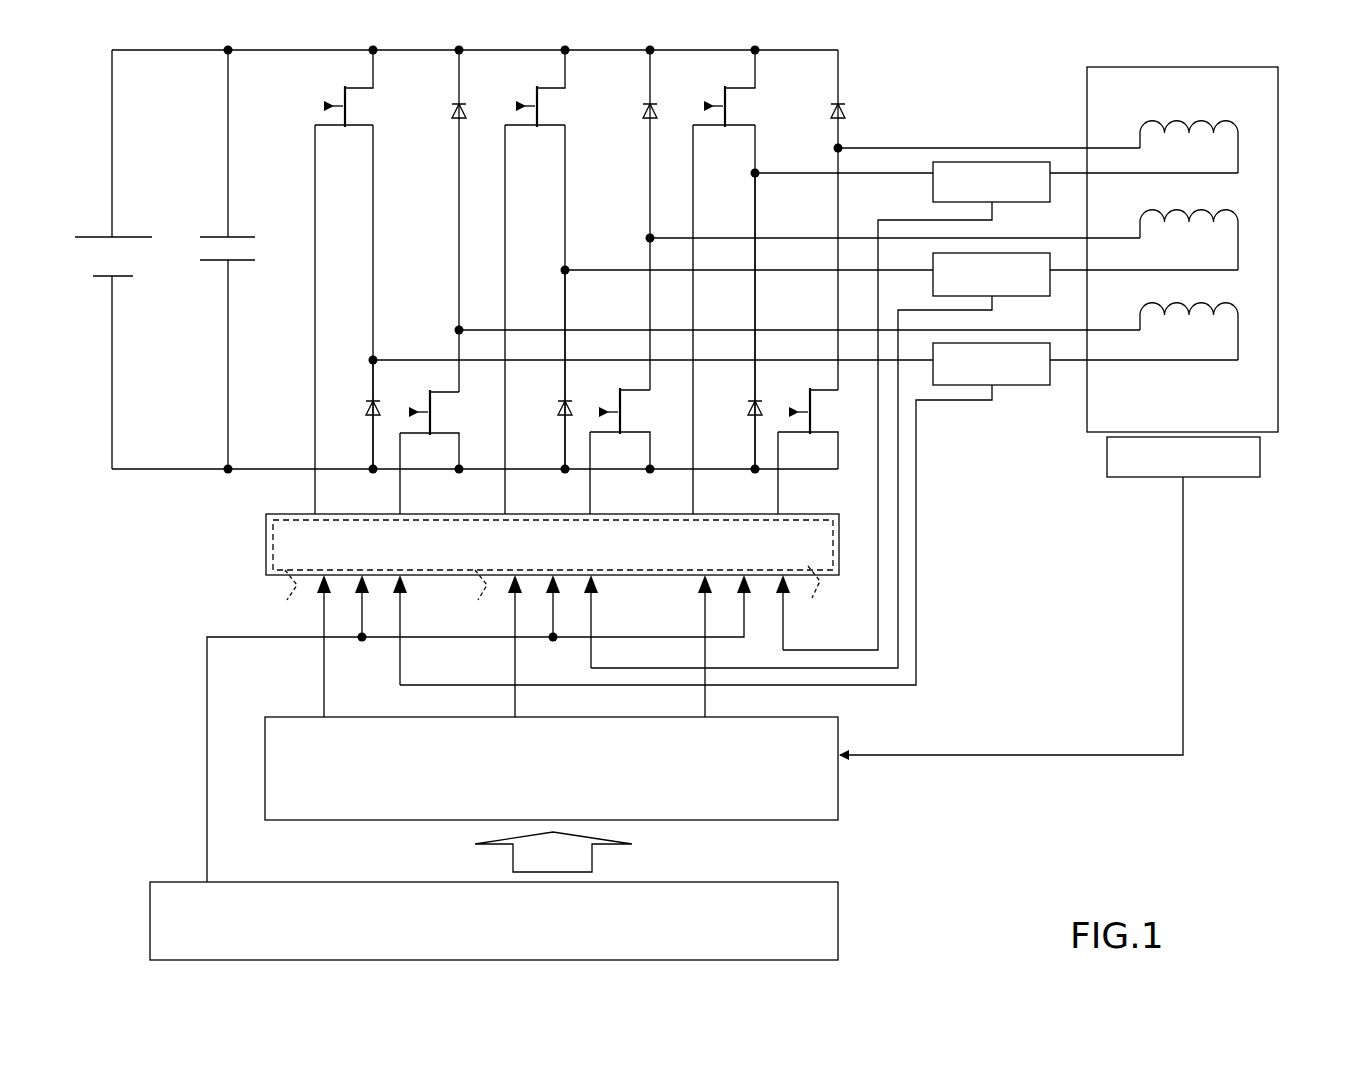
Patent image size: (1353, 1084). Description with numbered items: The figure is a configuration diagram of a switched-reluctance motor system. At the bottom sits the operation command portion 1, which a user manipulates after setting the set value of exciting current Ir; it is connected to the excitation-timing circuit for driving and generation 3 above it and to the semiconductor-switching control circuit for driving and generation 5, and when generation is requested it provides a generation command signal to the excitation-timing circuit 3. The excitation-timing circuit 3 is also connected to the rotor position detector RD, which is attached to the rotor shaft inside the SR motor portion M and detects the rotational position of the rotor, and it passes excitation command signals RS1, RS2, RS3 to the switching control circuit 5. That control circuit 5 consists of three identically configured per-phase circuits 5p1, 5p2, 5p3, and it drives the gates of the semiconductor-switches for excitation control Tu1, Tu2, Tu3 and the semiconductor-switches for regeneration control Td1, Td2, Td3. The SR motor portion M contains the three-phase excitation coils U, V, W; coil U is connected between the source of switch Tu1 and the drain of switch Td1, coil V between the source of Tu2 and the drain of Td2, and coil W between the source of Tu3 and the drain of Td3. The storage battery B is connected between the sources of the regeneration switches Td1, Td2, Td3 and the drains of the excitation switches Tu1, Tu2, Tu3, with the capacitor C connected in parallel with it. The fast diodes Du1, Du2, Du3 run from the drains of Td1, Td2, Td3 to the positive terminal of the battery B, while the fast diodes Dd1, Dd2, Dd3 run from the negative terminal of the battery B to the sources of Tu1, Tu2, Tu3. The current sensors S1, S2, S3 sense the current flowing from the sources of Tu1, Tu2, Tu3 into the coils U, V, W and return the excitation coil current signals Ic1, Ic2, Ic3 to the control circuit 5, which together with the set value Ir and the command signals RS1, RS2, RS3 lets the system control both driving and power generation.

The operation command portion 1 is at (840, 907).
The excitation-timing circuit for driving and generation 3 is at (840, 787).
The semiconductor-switching control circuit for driving and generation 5 is at (262, 550).
The SR motor portion M is at (1214, 249).
The rotor position detector RD is at (1260, 457).
The storage battery B is at (104, 259).
The capacitor C is at (206, 259).
The current sensor S1 is at (916, 406).
The current sensor S2 is at (820, 460).
The current sensor S3 is at (725, 514).
The semiconductor-switch for excitation control Tu1 is at (732, 282).
The semiconductor-switch for excitation control Tu2 is at (544, 282).
The semiconductor-switch for excitation control Tu3 is at (353, 282).
The semiconductor-switch for regeneration control Td1 is at (817, 451).
The semiconductor-switch for regeneration control Td2 is at (629, 451).
The semiconductor-switch for regeneration control Td3 is at (439, 452).
The fast diode Du1 is at (855, 220).
The fast diode Du2 is at (667, 220).
The fast diode Du3 is at (476, 221).
The fast diode Dd1 is at (771, 321).
The fast diode Dd2 is at (581, 369).
The fast diode Dd3 is at (389, 414).
The excitation coil U is at (1189, 147).
The excitation coil V is at (1189, 240).
The excitation coil W is at (1189, 331).
The semiconductor-switching control circuit for driving and generation 5p1 is at (816, 590).
The semiconductor-switching control circuit for driving and generation 5p2 is at (461, 590).
The semiconductor-switching control circuit for driving and generation 5p3 is at (270, 590).
The set value of exciting current Ir is at (475, 737).
The excitation coil current signal Ic1 is at (796, 621).
The excitation coil current signal Ic2 is at (604, 630).
The excitation coil current signal Ic3 is at (414, 639).
The excitation command signal RS1 is at (723, 655).
The excitation command signal RS2 is at (532, 655).
The excitation command signal RS3 is at (341, 655).